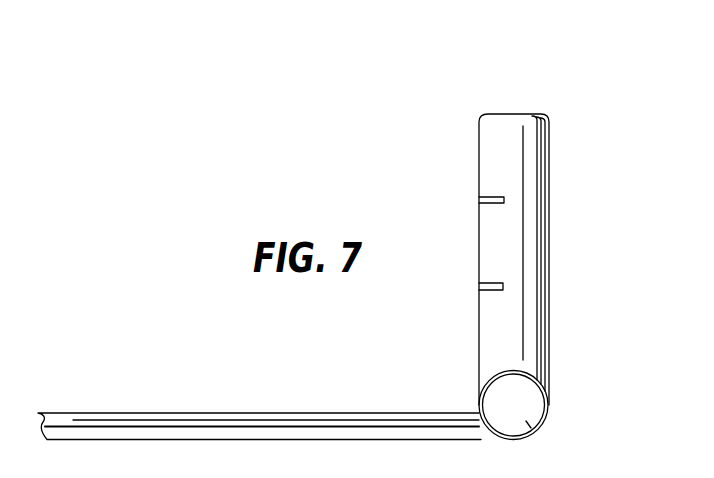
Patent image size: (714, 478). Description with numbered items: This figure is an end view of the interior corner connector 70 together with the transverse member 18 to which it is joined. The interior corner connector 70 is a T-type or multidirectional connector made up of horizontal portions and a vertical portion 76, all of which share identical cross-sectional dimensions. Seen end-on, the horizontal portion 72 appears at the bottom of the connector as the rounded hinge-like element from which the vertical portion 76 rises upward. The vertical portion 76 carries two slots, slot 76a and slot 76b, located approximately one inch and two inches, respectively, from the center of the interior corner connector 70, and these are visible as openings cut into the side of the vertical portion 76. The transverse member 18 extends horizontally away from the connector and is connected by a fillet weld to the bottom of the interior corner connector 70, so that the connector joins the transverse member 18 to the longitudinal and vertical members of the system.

The interior corner connector 70 is at (470, 64).
The vertical portion 76 is at (547, 211).
The slot 76a is at (490, 283).
The slot 76b is at (490, 197).
The horizontal portion 72 is at (540, 431).
The transverse member 18 is at (248, 428).